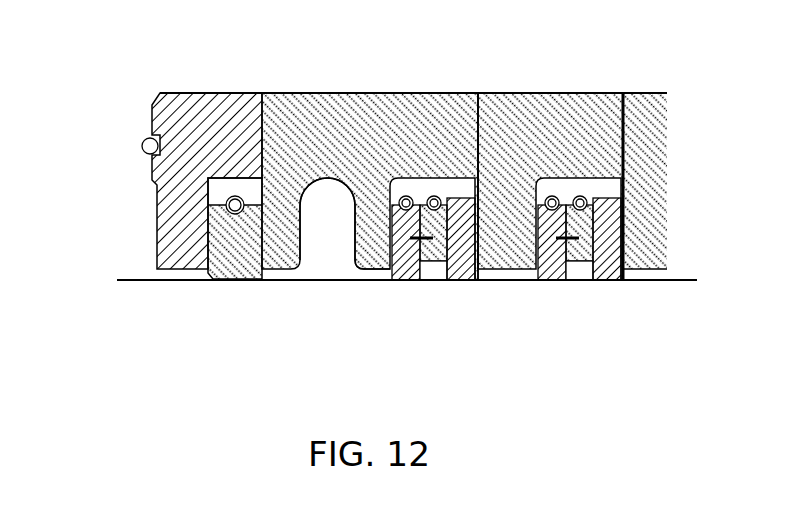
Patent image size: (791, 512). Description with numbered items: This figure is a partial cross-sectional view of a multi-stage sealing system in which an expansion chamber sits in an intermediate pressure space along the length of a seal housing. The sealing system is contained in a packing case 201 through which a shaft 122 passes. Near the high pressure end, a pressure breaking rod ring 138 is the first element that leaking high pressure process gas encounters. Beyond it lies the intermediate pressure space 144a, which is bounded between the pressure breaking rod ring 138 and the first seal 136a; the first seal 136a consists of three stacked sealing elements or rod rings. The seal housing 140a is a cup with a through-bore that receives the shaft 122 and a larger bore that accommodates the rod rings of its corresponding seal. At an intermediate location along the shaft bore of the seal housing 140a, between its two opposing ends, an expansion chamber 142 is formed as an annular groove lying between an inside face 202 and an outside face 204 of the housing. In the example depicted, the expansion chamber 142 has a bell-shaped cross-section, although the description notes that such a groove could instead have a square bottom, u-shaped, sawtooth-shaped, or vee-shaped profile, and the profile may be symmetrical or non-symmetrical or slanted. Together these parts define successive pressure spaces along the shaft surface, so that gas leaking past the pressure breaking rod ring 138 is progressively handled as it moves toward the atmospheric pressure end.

The packing case 201 is at (374, 187).
The inside face 202 is at (264, 245).
The pressure breaking rod ring 138 is at (232, 237).
The shaft 122 is at (142, 280).
The seal housing 140a is at (413, 193).
The expansion chamber 142 is at (331, 228).
The intermediate pressure space 144a is at (374, 281).
The first seal 136a is at (465, 281).
The outside face 204 is at (478, 158).